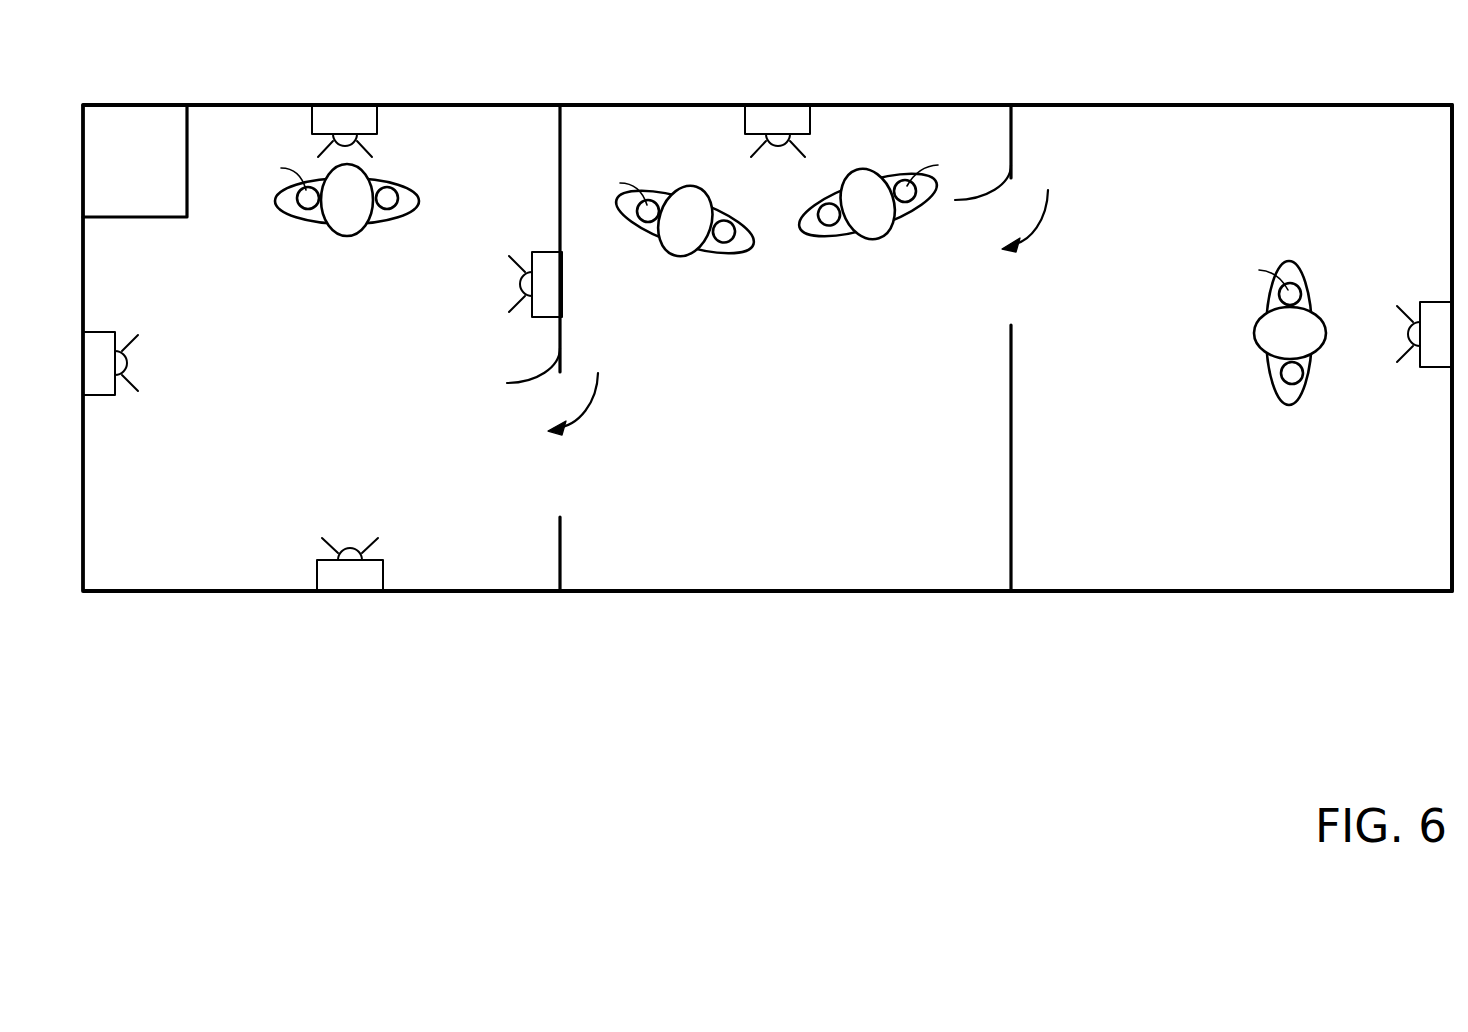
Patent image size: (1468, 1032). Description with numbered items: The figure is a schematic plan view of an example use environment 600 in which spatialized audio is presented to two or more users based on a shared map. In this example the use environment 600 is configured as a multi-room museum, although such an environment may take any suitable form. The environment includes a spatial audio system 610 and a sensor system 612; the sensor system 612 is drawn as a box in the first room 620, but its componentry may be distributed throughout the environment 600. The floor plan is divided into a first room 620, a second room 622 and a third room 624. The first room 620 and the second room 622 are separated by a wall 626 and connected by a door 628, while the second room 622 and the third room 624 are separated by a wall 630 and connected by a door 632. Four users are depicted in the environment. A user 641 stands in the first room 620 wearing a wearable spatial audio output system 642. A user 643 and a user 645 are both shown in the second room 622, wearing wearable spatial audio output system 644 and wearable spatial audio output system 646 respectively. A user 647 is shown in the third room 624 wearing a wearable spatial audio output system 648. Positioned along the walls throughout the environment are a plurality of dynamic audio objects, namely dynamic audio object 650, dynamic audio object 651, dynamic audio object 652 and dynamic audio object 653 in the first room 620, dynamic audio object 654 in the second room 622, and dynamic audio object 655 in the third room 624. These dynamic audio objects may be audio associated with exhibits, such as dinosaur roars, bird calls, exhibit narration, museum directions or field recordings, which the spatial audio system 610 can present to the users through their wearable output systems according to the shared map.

The use environment 600 is at (756, 26).
The spatial audio system 610 is at (599, 81).
The sensor system 612 is at (135, 161).
The first room 620 is at (534, 348).
The second room 622 is at (989, 348).
The third room 624 is at (1430, 348).
The wall 626 is at (525, 381).
The door 628 is at (581, 389).
The wall 630 is at (976, 197).
The door 632 is at (1033, 206).
The user 641 is at (333, 196).
The wearable spatial audio output system 642 is at (283, 182).
The user 643 is at (673, 221).
The wearable spatial audio output system 644 is at (621, 196).
The user 645 is at (880, 204).
The wearable spatial audio output system 646 is at (933, 177).
The user 647 is at (1274, 331).
The wearable spatial audio output system 648 is at (1262, 281).
The dynamic audio object 650 is at (344, 131).
The dynamic audio object 651 is at (535, 284).
The dynamic audio object 652 is at (110, 363).
The dynamic audio object 653 is at (350, 564).
The dynamic audio object 654 is at (777, 131).
The dynamic audio object 655 is at (1424, 334).